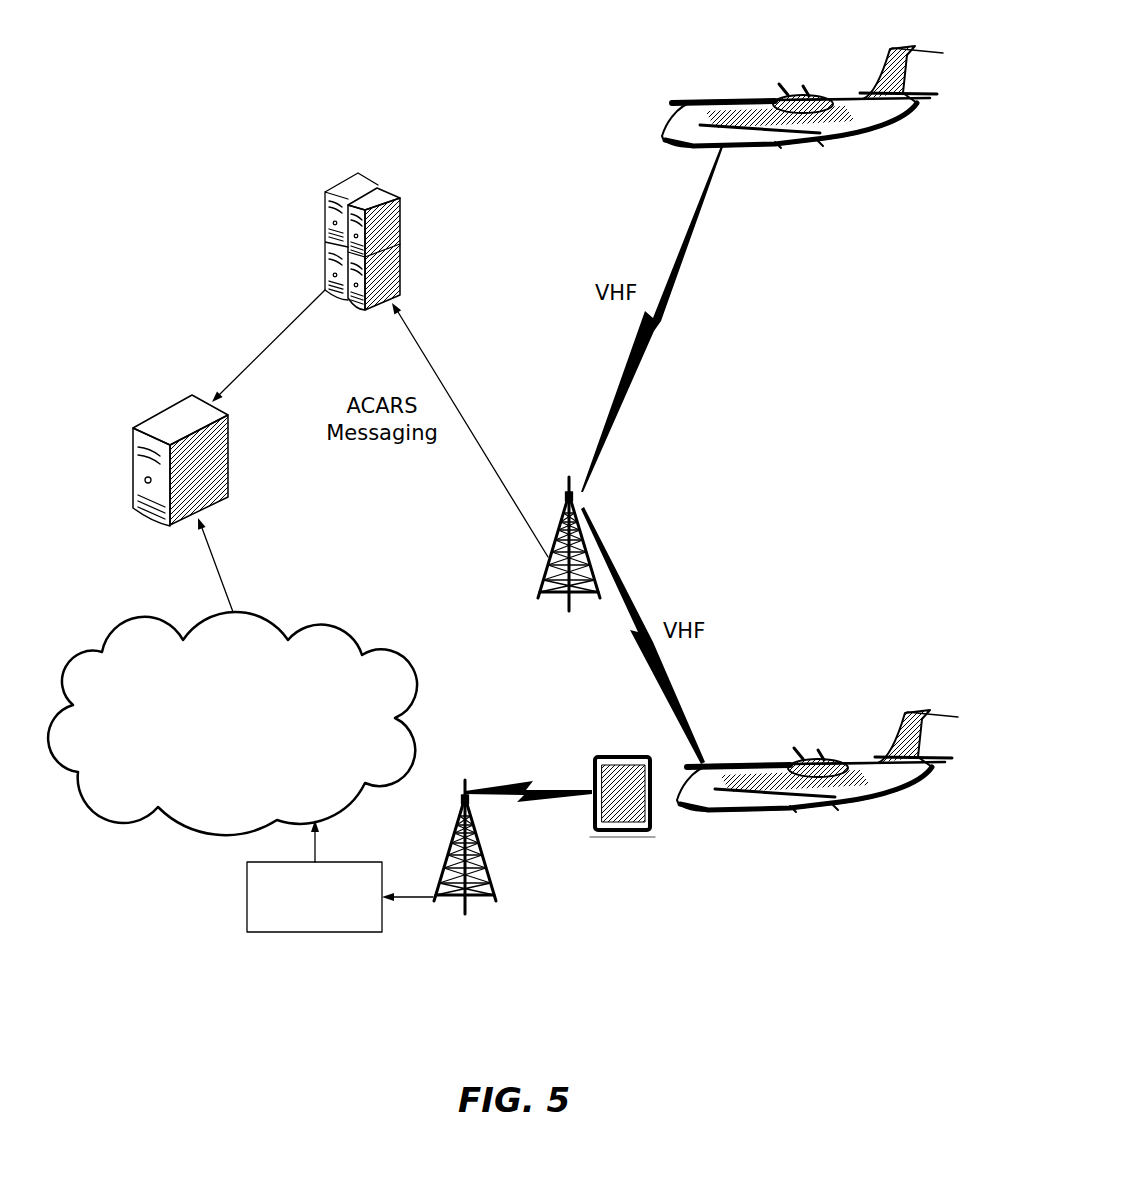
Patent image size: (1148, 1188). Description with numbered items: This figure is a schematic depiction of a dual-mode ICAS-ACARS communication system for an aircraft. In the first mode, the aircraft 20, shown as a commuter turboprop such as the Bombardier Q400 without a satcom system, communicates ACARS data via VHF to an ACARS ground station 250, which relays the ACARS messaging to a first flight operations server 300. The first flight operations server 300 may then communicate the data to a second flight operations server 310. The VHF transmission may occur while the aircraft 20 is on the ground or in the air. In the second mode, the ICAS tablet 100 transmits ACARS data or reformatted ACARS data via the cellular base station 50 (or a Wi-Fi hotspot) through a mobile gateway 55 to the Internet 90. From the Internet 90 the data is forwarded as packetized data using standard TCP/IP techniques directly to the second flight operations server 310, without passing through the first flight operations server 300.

The aircraft 20 is at (747, 810).
The first flight operations server 300 is at (400, 242).
The second flight operations server 310 is at (166, 405).
The ACARS ground station 250 is at (562, 600).
The Internet 90 is at (219, 748).
The mobile gateway 55 is at (327, 932).
The cellular base station 50 is at (497, 897).
The ICAS tablet 100 is at (632, 827).